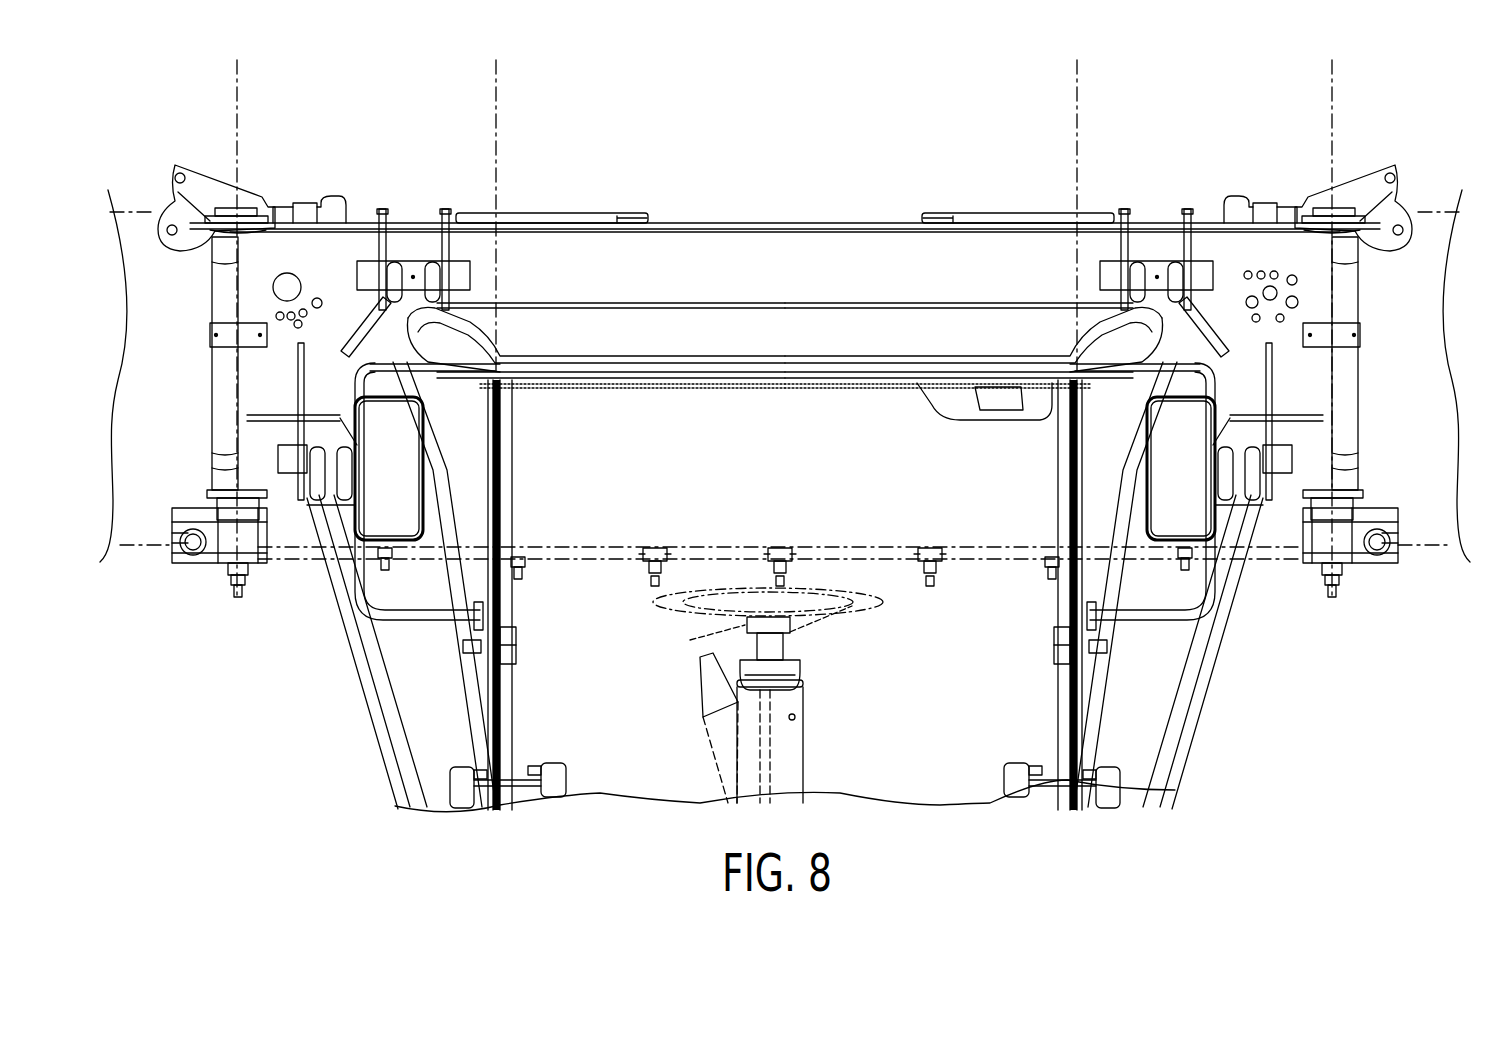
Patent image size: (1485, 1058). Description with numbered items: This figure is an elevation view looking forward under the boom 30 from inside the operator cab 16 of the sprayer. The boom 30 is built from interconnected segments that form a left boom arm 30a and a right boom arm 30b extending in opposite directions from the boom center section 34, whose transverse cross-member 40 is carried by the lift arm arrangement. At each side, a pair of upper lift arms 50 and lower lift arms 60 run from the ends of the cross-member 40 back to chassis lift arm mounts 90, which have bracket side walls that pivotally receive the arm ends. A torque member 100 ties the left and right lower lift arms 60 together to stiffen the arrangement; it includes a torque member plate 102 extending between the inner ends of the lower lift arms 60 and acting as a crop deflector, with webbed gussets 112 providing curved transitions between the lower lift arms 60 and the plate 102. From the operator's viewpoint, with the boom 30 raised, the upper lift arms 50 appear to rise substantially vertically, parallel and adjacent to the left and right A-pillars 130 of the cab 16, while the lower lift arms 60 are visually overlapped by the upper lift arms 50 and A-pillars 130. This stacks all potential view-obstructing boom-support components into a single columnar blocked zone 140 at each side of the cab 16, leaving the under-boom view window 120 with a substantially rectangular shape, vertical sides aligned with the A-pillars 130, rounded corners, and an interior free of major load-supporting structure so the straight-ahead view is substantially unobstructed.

The operator cab 16 is at (1182, 758).
The boom 30 is at (801, 195).
The left boom arm 30a is at (135, 225).
The right boom arm 30b is at (1436, 225).
The boom center section 34 is at (754, 198).
The cross-member 40 is at (696, 189).
The upper lift arms 50 is at (521, 669).
The lower lift arms 60 is at (381, 718).
The chassis lift arm mounts 90 is at (561, 757).
The torque member 100 is at (669, 785).
The torque member plate 102 is at (633, 787).
The webbed gussets 112 is at (571, 785).
The under-boom view window 120 is at (801, 433).
The A-pillars 130 is at (521, 614).
The blocked zone 140 is at (439, 207).